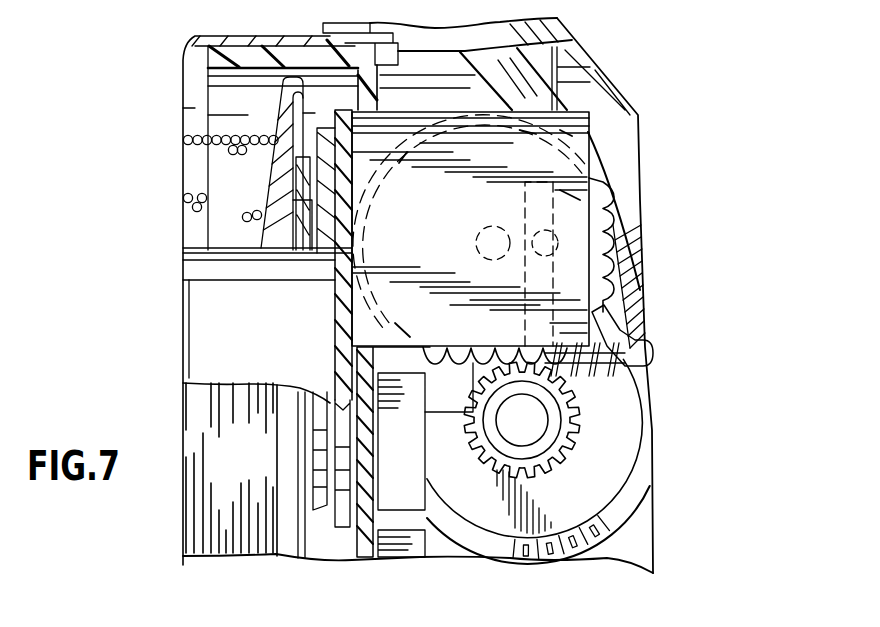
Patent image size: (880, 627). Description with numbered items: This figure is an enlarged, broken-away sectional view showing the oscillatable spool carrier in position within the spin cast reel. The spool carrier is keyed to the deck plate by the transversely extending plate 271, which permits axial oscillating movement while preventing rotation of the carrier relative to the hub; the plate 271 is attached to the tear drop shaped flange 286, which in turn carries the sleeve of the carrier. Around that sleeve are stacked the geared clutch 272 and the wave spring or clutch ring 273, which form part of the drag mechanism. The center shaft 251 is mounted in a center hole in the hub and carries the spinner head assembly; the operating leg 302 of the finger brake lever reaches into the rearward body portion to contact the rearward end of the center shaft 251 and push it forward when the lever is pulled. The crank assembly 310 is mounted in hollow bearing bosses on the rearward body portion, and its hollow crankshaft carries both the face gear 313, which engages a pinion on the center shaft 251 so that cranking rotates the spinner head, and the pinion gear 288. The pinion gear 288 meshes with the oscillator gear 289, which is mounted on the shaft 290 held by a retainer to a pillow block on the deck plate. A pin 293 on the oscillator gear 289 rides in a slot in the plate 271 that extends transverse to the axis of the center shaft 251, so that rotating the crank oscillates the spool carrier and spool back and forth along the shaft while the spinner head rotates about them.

The center shaft 251 is at (645, 358).
The plate 271 is at (575, 170).
The geared clutch 272 is at (323, 492).
The wave spring or clutch ring 273 is at (300, 205).
The tear drop shaped flange 286 is at (343, 312).
The pinion gear 288 is at (568, 462).
The oscillator gear 289 is at (600, 262).
The shaft 290 is at (478, 232).
The pin 293 is at (560, 240).
The operating leg 302 is at (640, 312).
The crank assembly 310 is at (540, 424).
The face gear 313 is at (622, 505).